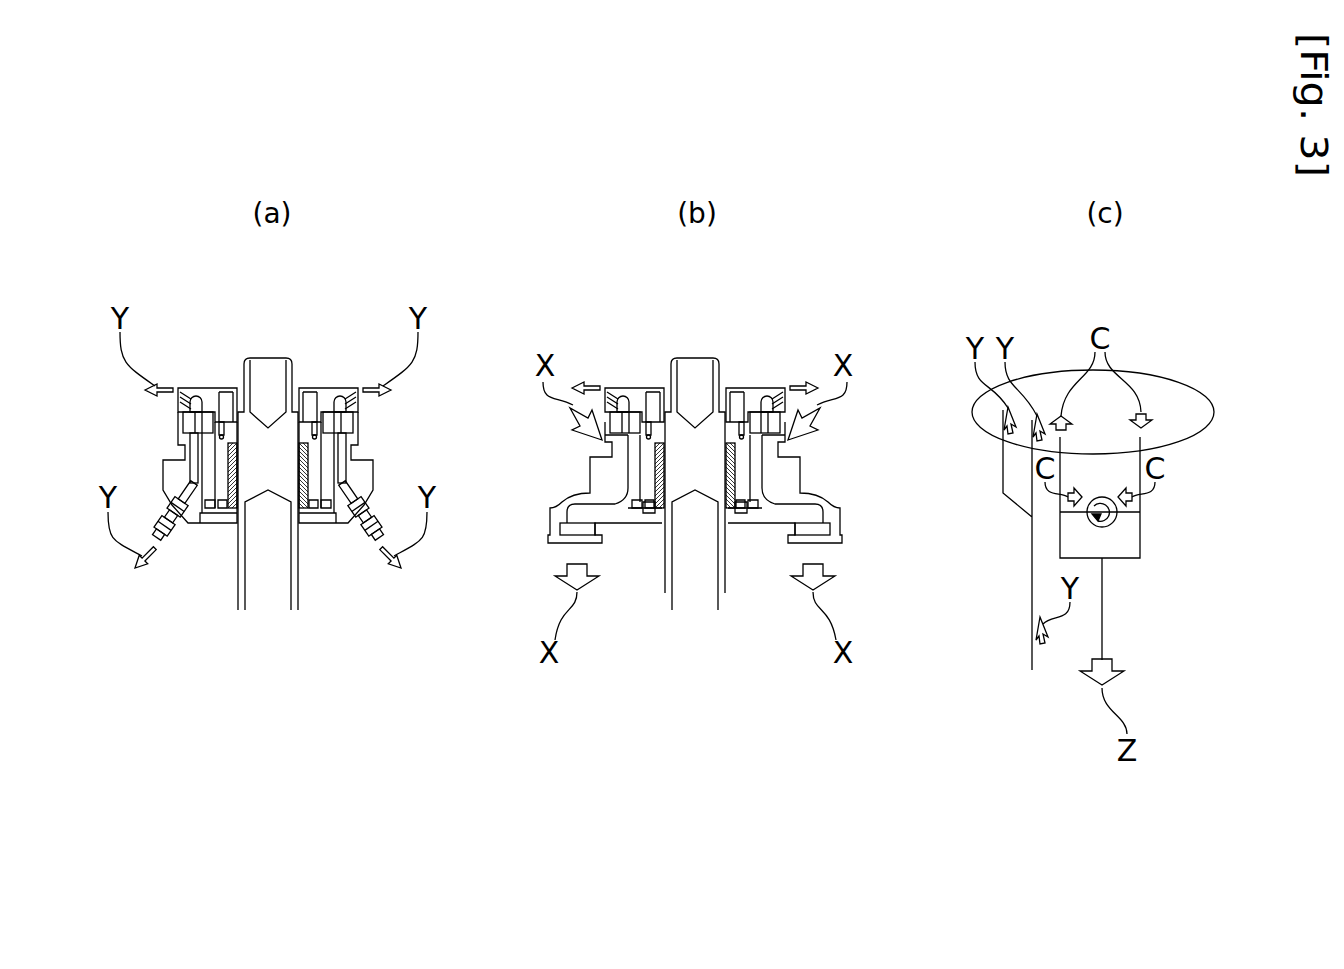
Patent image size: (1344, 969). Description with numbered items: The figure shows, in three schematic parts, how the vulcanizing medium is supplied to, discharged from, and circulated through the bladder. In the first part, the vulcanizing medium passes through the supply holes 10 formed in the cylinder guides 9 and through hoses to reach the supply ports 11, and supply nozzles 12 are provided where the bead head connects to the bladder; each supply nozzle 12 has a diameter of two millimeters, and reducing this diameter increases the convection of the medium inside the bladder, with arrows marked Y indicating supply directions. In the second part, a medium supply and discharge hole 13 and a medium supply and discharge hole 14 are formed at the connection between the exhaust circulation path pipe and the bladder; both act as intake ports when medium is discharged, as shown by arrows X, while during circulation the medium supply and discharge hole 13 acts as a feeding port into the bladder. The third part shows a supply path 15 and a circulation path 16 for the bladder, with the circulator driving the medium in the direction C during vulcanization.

The cylinder guide 9 is at (347, 518).
The supply hole 10 is at (351, 482).
The supply port 11 is at (355, 421).
The supply nozzle 12 is at (340, 398).
The medium supply and discharge hole 13 is at (600, 443).
The medium supply and discharge hole 14 is at (790, 443).
The supply path 15 is at (1032, 586).
The circulation path 16 is at (1140, 573).